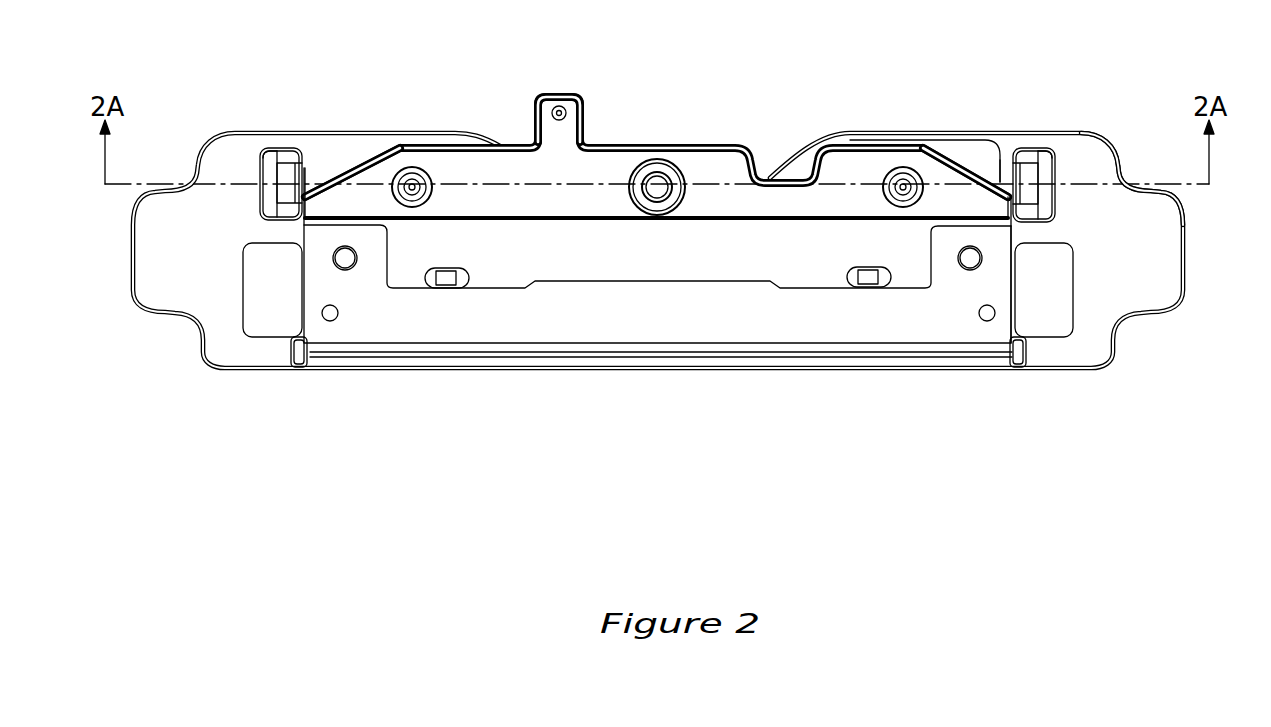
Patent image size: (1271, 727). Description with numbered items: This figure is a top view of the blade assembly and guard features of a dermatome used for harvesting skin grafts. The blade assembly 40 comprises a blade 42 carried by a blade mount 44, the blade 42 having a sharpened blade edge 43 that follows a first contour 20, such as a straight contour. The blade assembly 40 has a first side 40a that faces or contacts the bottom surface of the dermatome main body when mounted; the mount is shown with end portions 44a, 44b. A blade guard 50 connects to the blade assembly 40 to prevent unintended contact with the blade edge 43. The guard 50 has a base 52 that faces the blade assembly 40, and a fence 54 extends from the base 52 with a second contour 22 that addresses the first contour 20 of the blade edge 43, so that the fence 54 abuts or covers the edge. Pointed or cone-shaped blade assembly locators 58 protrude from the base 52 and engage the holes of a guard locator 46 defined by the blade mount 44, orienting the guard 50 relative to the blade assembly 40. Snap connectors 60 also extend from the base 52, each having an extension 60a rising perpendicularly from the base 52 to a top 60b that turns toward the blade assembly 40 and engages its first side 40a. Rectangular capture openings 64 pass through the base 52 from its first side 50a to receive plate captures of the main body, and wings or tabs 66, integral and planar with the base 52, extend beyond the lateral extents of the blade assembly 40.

The first contour 20 is at (440, 353).
The second contour 22 is at (378, 347).
The blade assembly 40 is at (280, 233).
The first side 40a is at (582, 180).
The blade 42 is at (1014, 238).
The blade edge 43 is at (645, 353).
The blade mount 44 is at (615, 144).
The first inclined portion 44a is at (358, 180).
The second inclined portion 44b is at (918, 136).
The guard locator 46 is at (425, 192).
The blade guard 50 is at (1112, 147).
The first side 50a is at (1120, 218).
The base 52 is at (980, 147).
The fence 54 is at (983, 372).
The blade assembly locator 58 is at (412, 185).
The connector 60 is at (257, 175).
The extension 60a is at (302, 176).
The top 60b is at (270, 158).
The capture opening 64 is at (240, 287).
The tab 66 is at (135, 222).